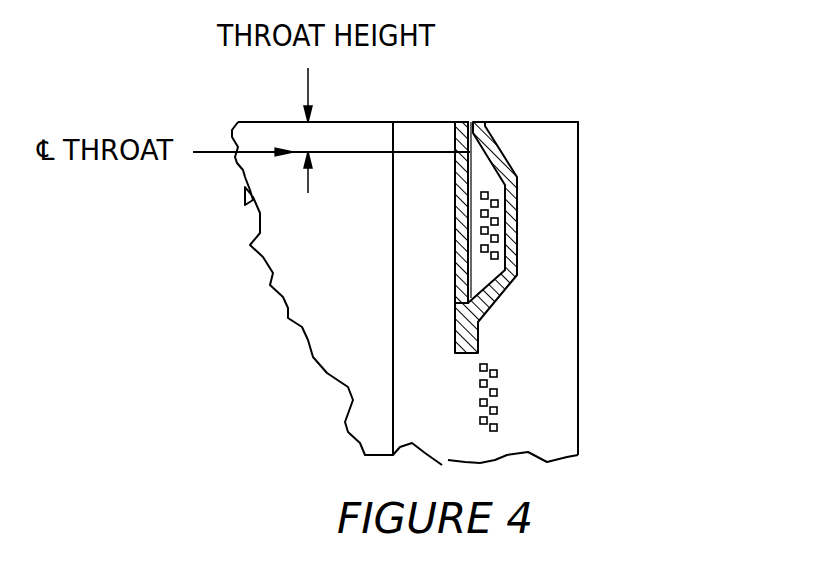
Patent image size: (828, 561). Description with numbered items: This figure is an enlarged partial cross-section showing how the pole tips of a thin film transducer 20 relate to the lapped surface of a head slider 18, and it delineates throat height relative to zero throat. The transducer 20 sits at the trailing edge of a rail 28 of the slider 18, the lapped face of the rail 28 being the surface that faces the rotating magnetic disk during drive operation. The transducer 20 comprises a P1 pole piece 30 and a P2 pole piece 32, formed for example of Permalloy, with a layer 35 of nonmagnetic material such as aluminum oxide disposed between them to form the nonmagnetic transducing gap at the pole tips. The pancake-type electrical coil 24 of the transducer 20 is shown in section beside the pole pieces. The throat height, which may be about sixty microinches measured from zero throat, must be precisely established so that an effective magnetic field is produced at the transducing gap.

The slider 18 is at (377, 138).
The thin film transducer 20 is at (412, 265).
The electrical coil 24 is at (495, 220).
The rail 28 is at (317, 122).
The P1 pole piece 30 is at (457, 122).
The P2 pole piece 32 is at (498, 122).
The layer of nonmagnetic material 35 is at (470, 122).